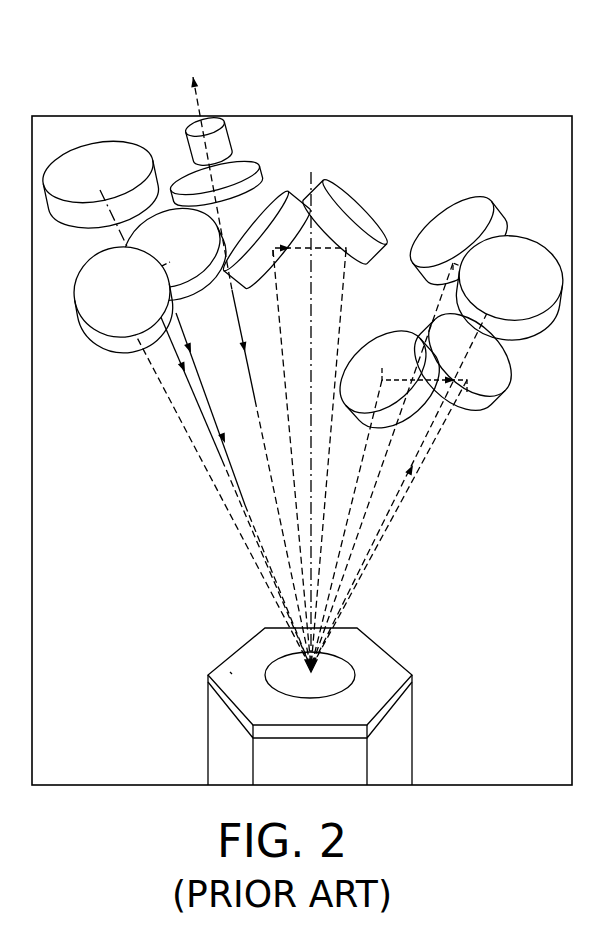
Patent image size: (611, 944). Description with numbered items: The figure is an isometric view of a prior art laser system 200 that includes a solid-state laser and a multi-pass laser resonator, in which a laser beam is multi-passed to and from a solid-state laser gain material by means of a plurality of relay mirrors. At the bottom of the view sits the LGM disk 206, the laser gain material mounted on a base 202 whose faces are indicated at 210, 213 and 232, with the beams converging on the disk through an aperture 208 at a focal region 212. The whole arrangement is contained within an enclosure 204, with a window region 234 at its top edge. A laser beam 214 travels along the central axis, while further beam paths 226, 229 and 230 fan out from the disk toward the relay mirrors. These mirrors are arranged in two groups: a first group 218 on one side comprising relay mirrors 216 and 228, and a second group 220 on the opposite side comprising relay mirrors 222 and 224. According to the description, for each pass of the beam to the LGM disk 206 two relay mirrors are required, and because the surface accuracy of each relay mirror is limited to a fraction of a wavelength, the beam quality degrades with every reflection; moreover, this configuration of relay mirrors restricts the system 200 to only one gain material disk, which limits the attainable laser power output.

The laser system 200 is at (363, 42).
The workpiece (nut) 202 is at (324, 700).
The housing 204 is at (437, 110).
The LGM disk 206 is at (410, 662).
The aperture 208 is at (280, 660).
The workpiece surface 210 is at (230, 672).
The focal spot 212 is at (343, 662).
The chamfer 213 is at (396, 703).
The laser beam 214 is at (247, 342).
The laser source 216 is at (230, 132).
The first beam delivery assembly 218 is at (172, 422).
The second beam delivery assembly 220 is at (498, 165).
The mirror 222 is at (455, 207).
The mirror 224 is at (515, 232).
The beam segment 226 is at (212, 370).
The mirror 228 is at (100, 144).
The beam segment 229 is at (178, 363).
The beam segment 230 is at (222, 420).
The side surface 232 is at (413, 740).
The window 234 is at (318, 115).